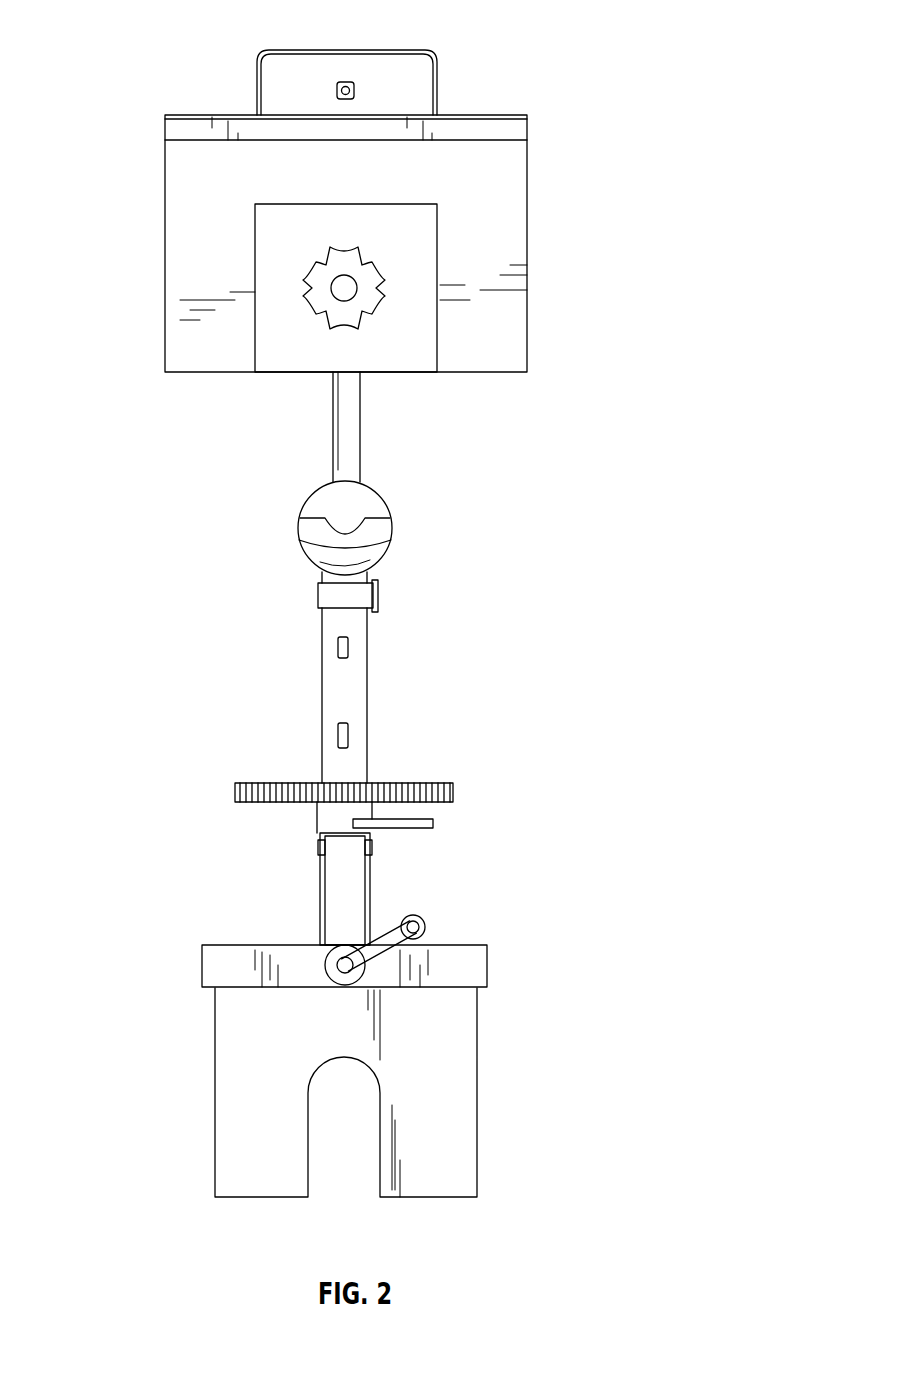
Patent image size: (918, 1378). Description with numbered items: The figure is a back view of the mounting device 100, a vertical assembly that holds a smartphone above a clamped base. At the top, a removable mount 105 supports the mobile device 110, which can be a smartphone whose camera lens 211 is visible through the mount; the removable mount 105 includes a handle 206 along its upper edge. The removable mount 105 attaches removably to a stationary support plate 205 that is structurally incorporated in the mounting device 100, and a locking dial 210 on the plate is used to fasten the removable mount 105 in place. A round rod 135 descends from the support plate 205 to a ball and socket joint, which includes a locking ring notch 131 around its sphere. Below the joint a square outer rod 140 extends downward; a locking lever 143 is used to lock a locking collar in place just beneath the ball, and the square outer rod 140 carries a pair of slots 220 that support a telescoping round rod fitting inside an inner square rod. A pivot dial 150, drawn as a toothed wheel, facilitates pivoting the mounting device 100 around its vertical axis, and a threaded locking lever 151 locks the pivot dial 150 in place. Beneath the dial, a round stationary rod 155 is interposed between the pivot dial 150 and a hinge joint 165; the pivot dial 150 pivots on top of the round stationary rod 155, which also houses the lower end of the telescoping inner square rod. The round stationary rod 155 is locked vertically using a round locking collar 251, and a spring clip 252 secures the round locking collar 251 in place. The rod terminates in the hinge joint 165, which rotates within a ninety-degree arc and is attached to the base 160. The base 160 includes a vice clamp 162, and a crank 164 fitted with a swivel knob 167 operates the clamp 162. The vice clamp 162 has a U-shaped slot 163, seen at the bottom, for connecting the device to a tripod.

The mounting device 100 is at (504, 1157).
The removable mount 105 is at (468, 374).
The mobile device 110 is at (437, 80).
The locking ring notch 131 is at (348, 515).
The round rod 135 is at (360, 410).
The square outer rod 140 is at (367, 733).
The locking lever 143 is at (378, 598).
The pivot dial 150 is at (235, 792).
The locking lever 151 is at (372, 803).
The round stationary rod 155 is at (370, 875).
The base 160 is at (487, 967).
The vice clamp 162 is at (460, 1063).
The U-shaped slot 163 is at (355, 1136).
The crank 164 is at (326, 958).
The hinge joint 165 is at (427, 920).
The swivel knob 167 is at (418, 933).
The stationary support plate 205 is at (437, 224).
The handle 206 is at (527, 133).
The locking dial 210 is at (297, 288).
The camera lens 211 is at (355, 88).
The slots 220 is at (350, 648).
The round locking collar 251 is at (372, 848).
The spring clip 252 is at (318, 845).